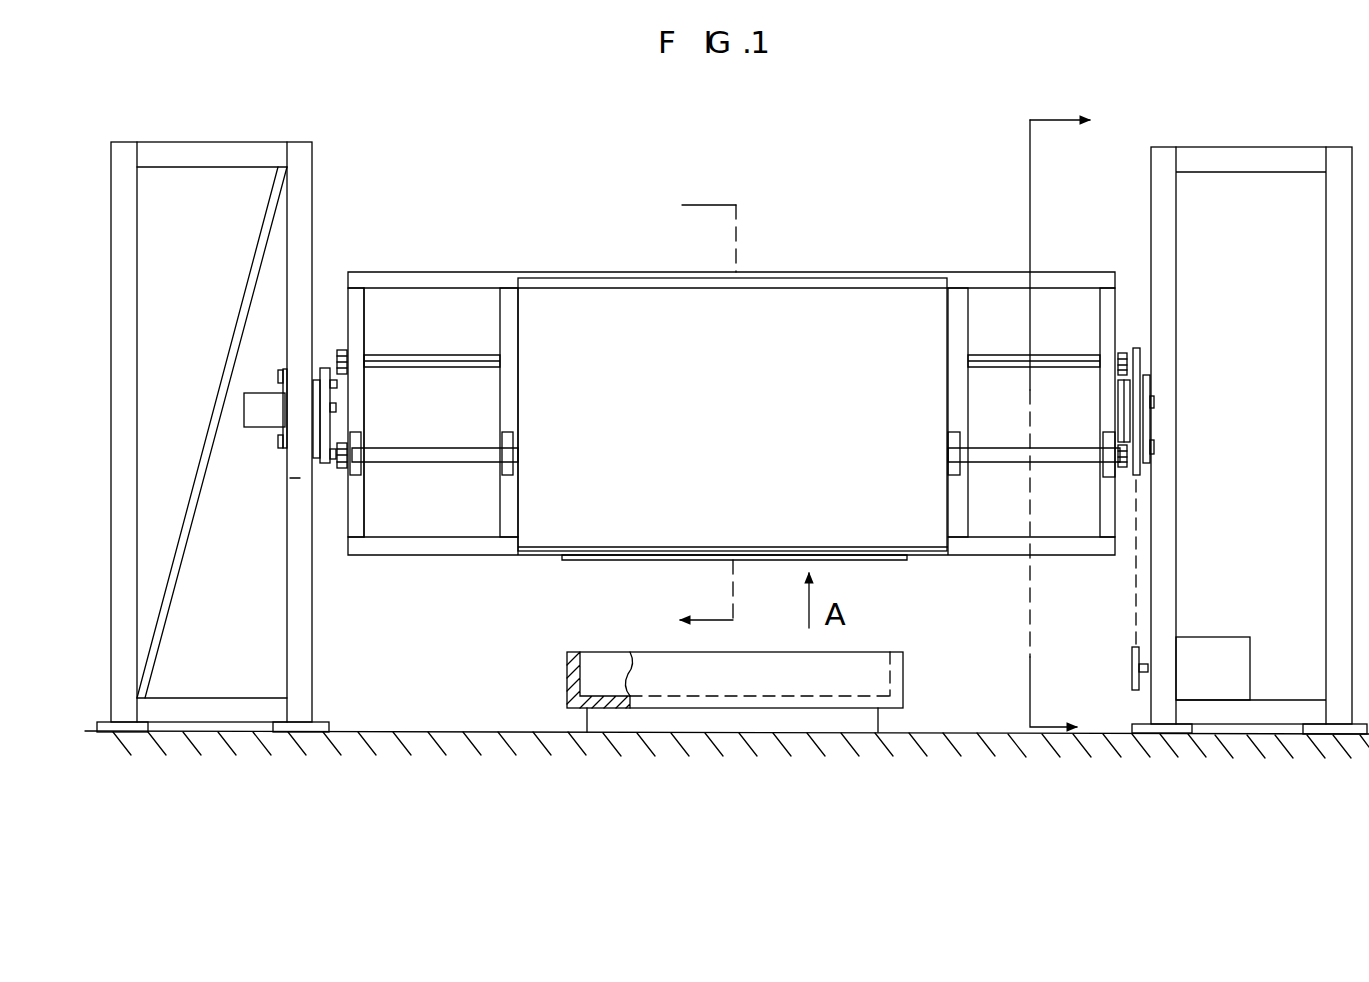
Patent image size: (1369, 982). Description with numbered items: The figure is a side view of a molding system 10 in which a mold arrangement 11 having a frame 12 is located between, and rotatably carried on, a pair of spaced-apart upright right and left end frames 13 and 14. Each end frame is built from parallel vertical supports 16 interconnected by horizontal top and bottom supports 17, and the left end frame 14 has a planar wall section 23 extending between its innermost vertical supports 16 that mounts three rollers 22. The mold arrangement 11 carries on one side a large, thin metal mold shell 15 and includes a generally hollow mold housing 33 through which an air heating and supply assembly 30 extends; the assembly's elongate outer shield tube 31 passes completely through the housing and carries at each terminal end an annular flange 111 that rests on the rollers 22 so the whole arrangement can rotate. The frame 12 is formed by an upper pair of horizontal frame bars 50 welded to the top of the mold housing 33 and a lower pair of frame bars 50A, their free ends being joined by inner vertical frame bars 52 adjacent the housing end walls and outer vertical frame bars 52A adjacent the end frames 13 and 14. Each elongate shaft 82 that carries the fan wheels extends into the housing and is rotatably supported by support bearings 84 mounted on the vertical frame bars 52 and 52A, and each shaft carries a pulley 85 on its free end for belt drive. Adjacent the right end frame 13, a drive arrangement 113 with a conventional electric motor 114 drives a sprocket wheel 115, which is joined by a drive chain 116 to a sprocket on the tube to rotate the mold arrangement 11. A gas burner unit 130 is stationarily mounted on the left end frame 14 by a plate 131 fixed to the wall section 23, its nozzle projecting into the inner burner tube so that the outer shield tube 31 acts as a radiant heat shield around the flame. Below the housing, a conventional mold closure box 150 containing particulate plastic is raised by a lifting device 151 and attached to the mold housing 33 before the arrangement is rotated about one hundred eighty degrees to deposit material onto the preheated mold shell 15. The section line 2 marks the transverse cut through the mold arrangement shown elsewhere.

The molding system 10 is at (888, 118).
The mold arrangement 11 is at (732, 372).
The frame 12 is at (468, 562).
The right end frame 13 is at (1220, 128).
The left end frame 14 is at (230, 401).
The mold shell 15 is at (612, 562).
The vertical supports 16 is at (312, 184).
The horizontal supports 17 is at (195, 170).
The section line 2- 2 is at (721, 414).
The rollers 22 is at (326, 400).
The wall section 23 is at (292, 480).
The air heating and supply assembly 30 is at (257, 452).
The outer shield tube 31 is at (382, 412).
The mold housing 33 is at (855, 278).
The upper frame bars 50 is at (788, 404).
The lower frame bars 50A is at (385, 556).
The inner vertical frame bars 52 is at (494, 290).
The outer vertical frame bars 52A is at (350, 290).
The shaft 82 is at (446, 356).
The support bearings 84 is at (357, 478).
The pulley 85 is at (338, 350).
The annular flange 111 is at (330, 392).
The drive arrangement 113 is at (1169, 593).
The electric motor 114 is at (1215, 650).
The sprocket wheel 115 is at (1132, 668).
The drive chain 116 is at (1133, 610).
The gas burner unit 130 is at (265, 386).
The plate 131 is at (286, 430).
The mold closure box 150 is at (567, 662).
The lifting device 151 is at (595, 722).